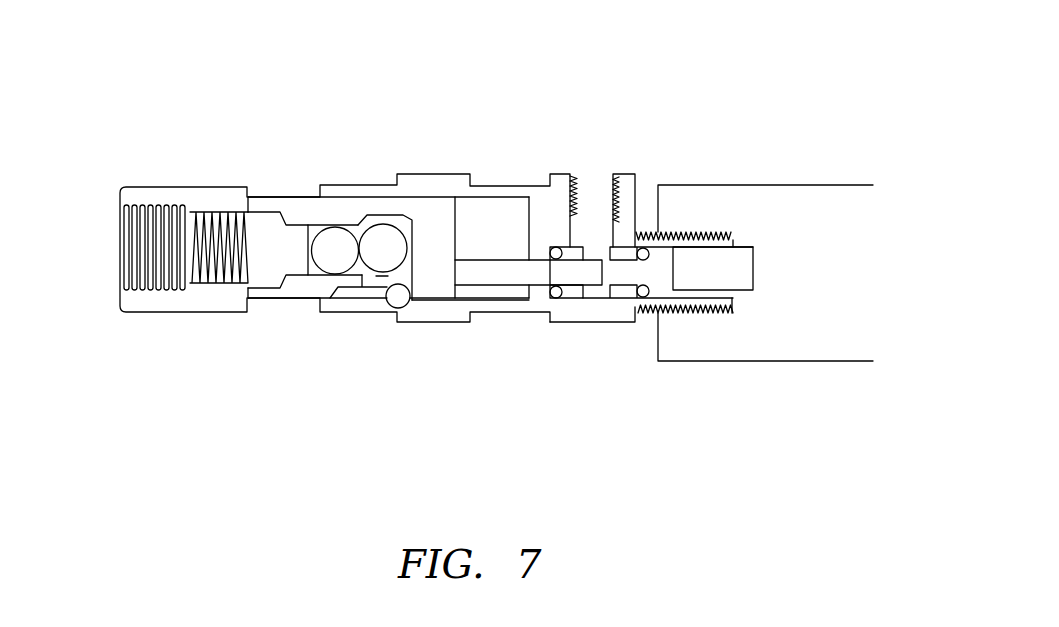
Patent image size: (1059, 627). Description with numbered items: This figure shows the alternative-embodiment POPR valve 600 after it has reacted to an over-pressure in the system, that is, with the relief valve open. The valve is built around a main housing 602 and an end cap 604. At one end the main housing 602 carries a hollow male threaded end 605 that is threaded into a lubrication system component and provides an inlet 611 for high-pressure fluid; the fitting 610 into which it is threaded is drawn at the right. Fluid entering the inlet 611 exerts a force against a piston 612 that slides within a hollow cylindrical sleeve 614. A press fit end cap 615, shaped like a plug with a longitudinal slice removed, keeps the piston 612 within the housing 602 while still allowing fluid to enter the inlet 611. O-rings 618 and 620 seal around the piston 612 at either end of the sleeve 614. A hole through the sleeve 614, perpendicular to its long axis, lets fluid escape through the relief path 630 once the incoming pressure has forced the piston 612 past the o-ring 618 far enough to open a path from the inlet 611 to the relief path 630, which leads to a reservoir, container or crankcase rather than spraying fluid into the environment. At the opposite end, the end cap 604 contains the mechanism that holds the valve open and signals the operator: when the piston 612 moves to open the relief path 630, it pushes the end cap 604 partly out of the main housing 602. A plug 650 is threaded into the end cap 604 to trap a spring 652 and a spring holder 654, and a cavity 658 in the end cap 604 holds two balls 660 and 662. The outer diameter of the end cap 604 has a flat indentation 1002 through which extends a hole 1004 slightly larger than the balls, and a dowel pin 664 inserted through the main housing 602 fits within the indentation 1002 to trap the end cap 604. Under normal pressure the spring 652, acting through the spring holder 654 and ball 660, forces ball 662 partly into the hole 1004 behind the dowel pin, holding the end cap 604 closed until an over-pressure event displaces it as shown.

The POPR valve 600 is at (773, 64).
The main housing 602 is at (420, 218).
The end cap 604 is at (140, 212).
The hollow male threaded end 605 is at (705, 230).
The fitting 610 is at (752, 185).
The inlet 611 is at (735, 298).
The piston 612 is at (470, 288).
The hollow cylindrical sleeve 614 is at (617, 292).
The press fit end cap 615 is at (757, 275).
The o-ring 618 is at (681, 311).
The o-ring 620 is at (553, 298).
The relief path 630 is at (588, 187).
The plug 650 is at (118, 248).
The spring 652 is at (200, 212).
The spring holder 654 is at (255, 212).
The cavity 658 is at (388, 205).
The ball 660 is at (318, 276).
The ball 662 is at (373, 275).
The dowel pin 664 is at (405, 307).
The flat indentation 1002 is at (345, 290).
The hole 1004 is at (379, 277).